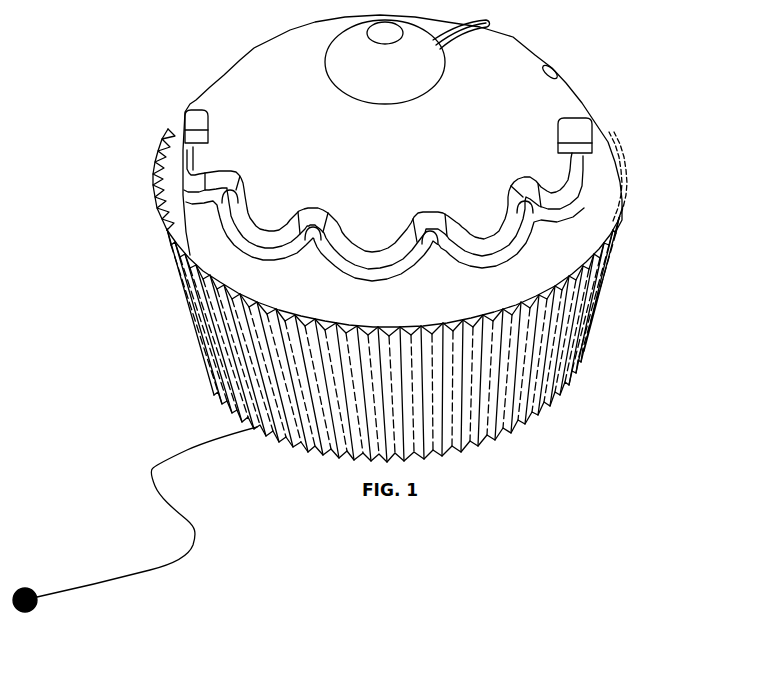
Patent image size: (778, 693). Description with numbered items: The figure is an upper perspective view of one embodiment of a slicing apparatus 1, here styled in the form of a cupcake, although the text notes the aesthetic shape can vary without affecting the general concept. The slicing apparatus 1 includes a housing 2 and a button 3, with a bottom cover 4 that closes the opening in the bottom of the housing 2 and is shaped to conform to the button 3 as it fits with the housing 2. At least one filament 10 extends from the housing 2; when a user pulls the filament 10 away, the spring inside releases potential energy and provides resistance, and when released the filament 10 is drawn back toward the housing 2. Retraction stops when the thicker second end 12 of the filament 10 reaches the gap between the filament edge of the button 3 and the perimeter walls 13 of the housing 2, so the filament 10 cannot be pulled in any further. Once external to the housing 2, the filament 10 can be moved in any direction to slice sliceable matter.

The slicing apparatus 1 is at (632, 127).
The housing 2 is at (607, 297).
The button 3 is at (207, 351).
The bottom cover 4 is at (217, 402).
The filament 10 is at (180, 562).
The second end 12 is at (37, 604).
The perimeter walls 13 is at (585, 372).